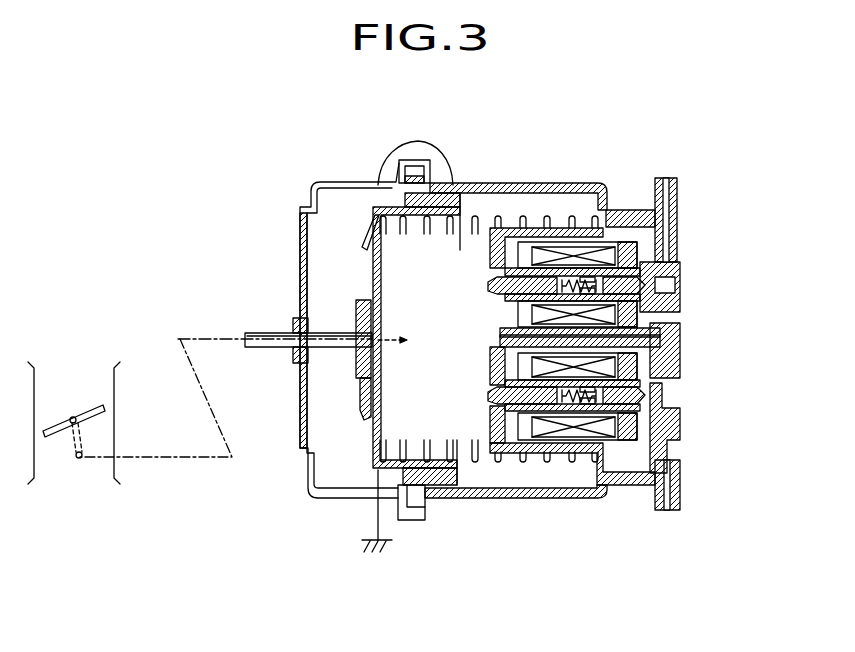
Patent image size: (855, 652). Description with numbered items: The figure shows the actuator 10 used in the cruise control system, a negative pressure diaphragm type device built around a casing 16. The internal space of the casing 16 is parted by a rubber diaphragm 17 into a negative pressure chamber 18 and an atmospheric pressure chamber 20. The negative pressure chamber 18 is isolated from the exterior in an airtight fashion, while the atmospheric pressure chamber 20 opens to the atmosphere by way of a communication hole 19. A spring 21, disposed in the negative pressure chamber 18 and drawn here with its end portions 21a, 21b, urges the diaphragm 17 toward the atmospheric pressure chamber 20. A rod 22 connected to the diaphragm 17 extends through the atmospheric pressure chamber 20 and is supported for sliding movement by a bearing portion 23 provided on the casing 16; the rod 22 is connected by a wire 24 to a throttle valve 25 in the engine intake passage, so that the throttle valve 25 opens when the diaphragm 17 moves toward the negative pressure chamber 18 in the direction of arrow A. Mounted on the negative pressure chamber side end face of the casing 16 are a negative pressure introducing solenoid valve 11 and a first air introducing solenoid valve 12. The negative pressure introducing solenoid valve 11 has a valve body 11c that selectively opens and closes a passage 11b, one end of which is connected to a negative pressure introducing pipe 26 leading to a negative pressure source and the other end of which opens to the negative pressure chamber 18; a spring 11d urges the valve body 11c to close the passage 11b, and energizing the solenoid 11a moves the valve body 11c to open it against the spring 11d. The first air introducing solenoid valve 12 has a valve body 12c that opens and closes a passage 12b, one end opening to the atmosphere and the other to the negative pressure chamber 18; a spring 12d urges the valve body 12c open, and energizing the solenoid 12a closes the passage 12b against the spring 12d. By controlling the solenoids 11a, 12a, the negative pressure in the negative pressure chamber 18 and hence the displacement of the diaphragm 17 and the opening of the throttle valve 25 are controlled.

The actuator 10 is at (517, 158).
The negative pressure introducing solenoid valve 11 is at (626, 232).
The solenoid 11a is at (562, 227).
The passage 11b is at (489, 283).
The valve body 11c is at (650, 297).
The spring 11d is at (577, 283).
The first air introducing solenoid valve 12 is at (622, 455).
The solenoid 12a is at (568, 462).
The passage 12b is at (487, 398).
The valve body 12c is at (485, 388).
The spring 12d is at (652, 363).
The casing 16 is at (421, 137).
The diaphragm 17 is at (378, 247).
The negative pressure chamber 18 is at (440, 305).
The communication hole 19 is at (311, 258).
The atmospheric pressure chamber 20 is at (352, 290).
The spring 21 is at (482, 212).
The upper flange of yoke 21a is at (589, 212).
The lower flange of yoke 21b is at (380, 457).
The rod 22 is at (254, 347).
The bearing portion 23 is at (295, 330).
The wire 24 is at (193, 372).
The throttle valve 25 is at (88, 407).
The negative pressure introducing pipe 26 is at (672, 196).